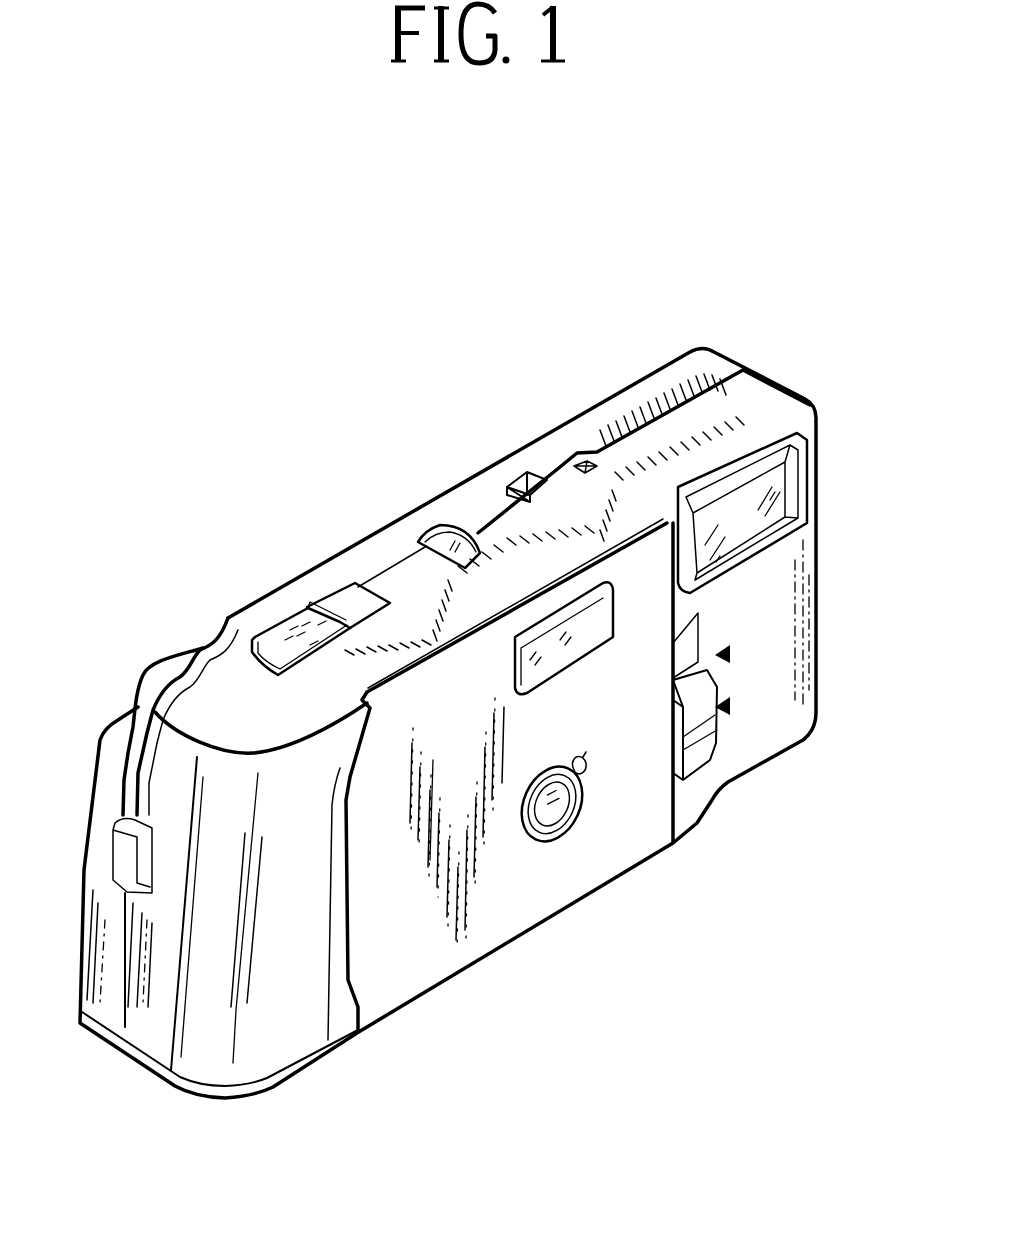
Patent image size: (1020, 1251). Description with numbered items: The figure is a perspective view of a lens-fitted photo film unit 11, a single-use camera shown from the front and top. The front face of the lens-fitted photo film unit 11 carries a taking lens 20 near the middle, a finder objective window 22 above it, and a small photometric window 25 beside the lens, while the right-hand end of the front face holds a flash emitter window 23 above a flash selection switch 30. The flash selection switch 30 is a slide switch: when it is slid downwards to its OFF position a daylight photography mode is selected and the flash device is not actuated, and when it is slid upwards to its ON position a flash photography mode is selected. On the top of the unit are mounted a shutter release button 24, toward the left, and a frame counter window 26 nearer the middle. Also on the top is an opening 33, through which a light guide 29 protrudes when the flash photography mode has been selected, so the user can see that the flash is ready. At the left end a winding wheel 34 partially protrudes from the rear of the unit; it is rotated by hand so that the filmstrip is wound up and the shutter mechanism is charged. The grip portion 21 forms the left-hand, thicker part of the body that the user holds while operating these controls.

The lens-fitted photo film unit 11 is at (823, 320).
The taking lens 20 is at (551, 843).
The grip portion 21 is at (437, 920).
The finder objective window 22 is at (503, 687).
The flash emitter window 23 is at (795, 492).
The shutter release button 24 is at (277, 647).
The photometric window 25 is at (573, 757).
The frame counter window 26 is at (438, 530).
The light guide 29 is at (513, 480).
The flash selection switch 30 is at (703, 747).
The opening 33 is at (535, 468).
The winding wheel 34 is at (160, 660).